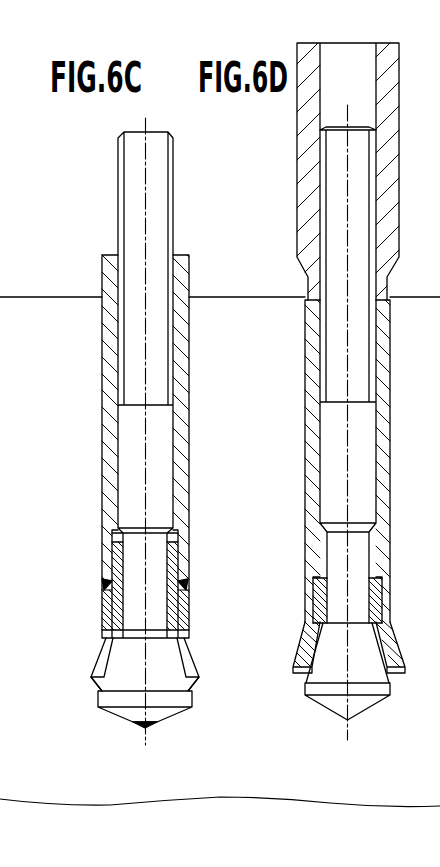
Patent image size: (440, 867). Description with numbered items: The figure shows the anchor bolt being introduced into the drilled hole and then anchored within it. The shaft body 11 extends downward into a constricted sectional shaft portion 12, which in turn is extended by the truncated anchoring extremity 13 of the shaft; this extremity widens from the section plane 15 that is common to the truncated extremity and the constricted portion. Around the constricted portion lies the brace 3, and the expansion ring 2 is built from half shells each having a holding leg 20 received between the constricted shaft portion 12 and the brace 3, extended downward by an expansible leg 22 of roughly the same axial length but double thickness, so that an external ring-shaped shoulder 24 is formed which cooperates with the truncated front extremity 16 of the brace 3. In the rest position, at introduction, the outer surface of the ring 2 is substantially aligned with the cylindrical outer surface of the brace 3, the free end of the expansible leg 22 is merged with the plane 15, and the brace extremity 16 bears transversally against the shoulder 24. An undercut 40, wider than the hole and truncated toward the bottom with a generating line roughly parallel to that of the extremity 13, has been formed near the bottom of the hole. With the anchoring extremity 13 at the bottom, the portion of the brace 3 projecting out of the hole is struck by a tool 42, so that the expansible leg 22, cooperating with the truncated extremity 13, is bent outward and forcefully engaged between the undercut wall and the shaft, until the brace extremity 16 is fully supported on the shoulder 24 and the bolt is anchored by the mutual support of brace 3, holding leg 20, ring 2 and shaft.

In FIG. 6C, the expansion ring 2 is at (102, 605).
In FIG. 6C, the brace 3 is at (108, 478).
In FIG. 6D, the brace 3 is at (308, 322).
In FIG. 6D, the shaft body 11 is at (362, 433).
In FIG. 6C, the constricted sectional shaft portion 12 is at (133, 558).
In FIG. 6D, the constricted sectional shaft portion 12 is at (355, 557).
In FIG. 6C, the anchoring extremity 13 is at (130, 672).
In FIG. 6D, the anchoring extremity 13 is at (360, 675).
In FIG. 6C, the section plane 15 is at (126, 646).
In FIG. 6C, the front extremity of the brace 16 is at (184, 610).
In FIG. 6C, the holding leg 20 is at (183, 553).
In FIG. 6D, the holding leg 20 is at (377, 600).
In FIG. 6D, the expansible leg 22 is at (423, 641).
In FIG. 6C, the external ring-shaped shoulder 24 is at (110, 577).
In FIG. 6C, the undercut 40 is at (186, 654).
In FIG. 6D, the tool 42 is at (390, 105).